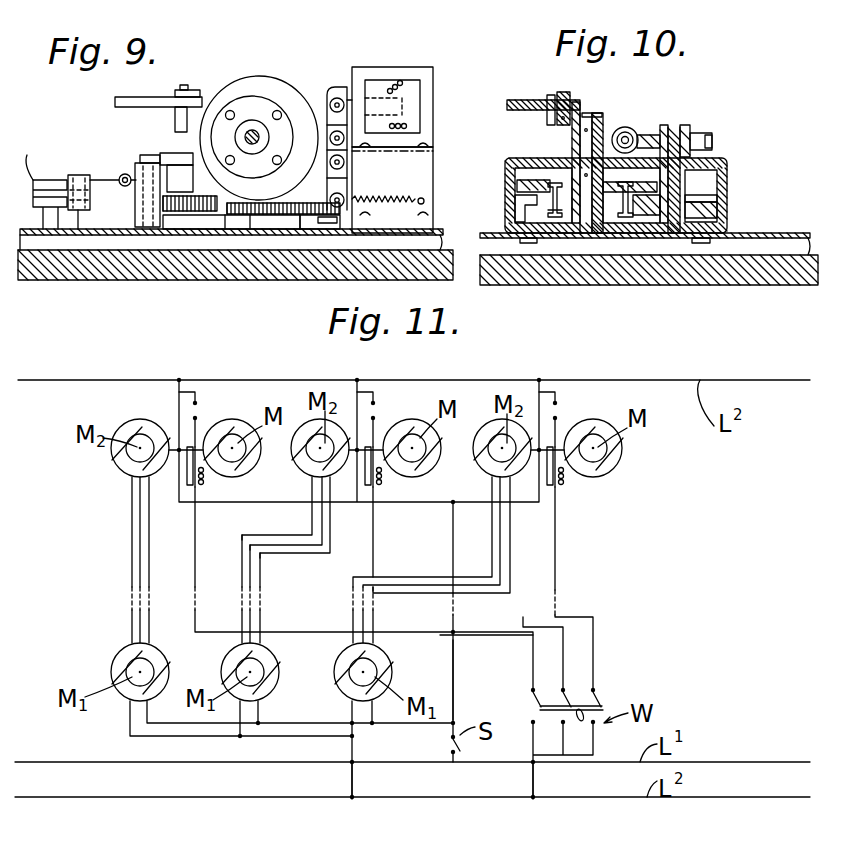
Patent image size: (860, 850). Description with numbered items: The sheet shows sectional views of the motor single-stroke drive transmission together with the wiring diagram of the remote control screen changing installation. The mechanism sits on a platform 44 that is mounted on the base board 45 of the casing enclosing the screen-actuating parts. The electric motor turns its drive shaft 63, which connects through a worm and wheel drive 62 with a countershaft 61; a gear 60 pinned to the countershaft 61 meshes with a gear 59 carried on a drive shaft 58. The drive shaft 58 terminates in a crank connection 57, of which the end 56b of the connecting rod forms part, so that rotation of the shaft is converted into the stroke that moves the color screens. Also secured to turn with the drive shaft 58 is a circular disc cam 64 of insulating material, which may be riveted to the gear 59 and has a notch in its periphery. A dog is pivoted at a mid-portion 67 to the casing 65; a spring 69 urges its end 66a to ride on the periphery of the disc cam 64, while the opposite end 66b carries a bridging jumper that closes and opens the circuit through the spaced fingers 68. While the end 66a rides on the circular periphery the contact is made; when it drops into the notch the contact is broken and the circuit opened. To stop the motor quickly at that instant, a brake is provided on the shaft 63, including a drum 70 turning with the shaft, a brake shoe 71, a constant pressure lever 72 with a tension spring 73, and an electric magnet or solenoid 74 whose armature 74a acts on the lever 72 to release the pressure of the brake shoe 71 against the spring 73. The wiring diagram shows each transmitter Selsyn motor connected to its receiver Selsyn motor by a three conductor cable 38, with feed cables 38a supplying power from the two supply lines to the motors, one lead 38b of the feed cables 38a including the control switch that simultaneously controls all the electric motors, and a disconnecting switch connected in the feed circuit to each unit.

In FIG. 9, the platform 44 is at (85, 236).
In FIG. 10, the platform 44 is at (758, 239).
In FIG. 9, the base board 45 is at (122, 268).
In FIG. 10, the base board 45 is at (790, 278).
In FIG. 9, the end of connecting rod 56b is at (150, 98).
In FIG. 10, the end of connecting rod 56b is at (530, 100).
In FIG. 9, the crank connection 57 is at (187, 124).
In FIG. 10, the crank connection 57 is at (571, 110).
In FIG. 10, the drive shaft 58 is at (591, 118).
In FIG. 9, the gear 59 is at (222, 213).
In FIG. 10, the gear 59 is at (548, 218).
In FIG. 9, the gear 60 is at (265, 216).
In FIG. 10, the gear 60 is at (727, 183).
In FIG. 10, the countershaft 61 is at (690, 133).
In FIG. 10, the worm and wheel drive 62 is at (650, 140).
In FIG. 9, the drive shaft of motor 63 is at (252, 130).
In FIG. 10, the drive shaft of motor 63 is at (628, 138).
In FIG. 9, the disc cam 64 is at (200, 133).
In FIG. 10, the disc cam 64 is at (535, 180).
In FIG. 9, the casing 65 is at (158, 158).
In FIG. 10, the casing 65 is at (728, 212).
In FIG. 9, the end of dog 66a is at (182, 185).
In FIG. 9, the end of dog 66b is at (72, 176).
In FIG. 9, the mid-portion of dog 67 is at (140, 165).
In FIG. 9, the spaced fingers 68 is at (27, 160).
In FIG. 11, the spaced fingers 68 is at (197, 402).
In FIG. 9, the spring 69 is at (120, 176).
In FIG. 9, the drum 70 is at (286, 90).
In FIG. 9, the brake shoe 71 is at (319, 110).
In FIG. 9, the constant pressure lever 72 is at (337, 182).
In FIG. 9, the tension spring 73 is at (422, 205).
In FIG. 9, the electric magnet or solenoid 74 is at (411, 88).
In FIG. 11, the electric magnet or solenoid 74 is at (206, 478).
In FIG. 9, the armature 74a is at (353, 100).
In FIG. 11, the three conductor cables 38 is at (306, 541).
In FIG. 11, the two conductor cable 38a is at (495, 633).
In FIG. 11, the lead 38b is at (455, 677).